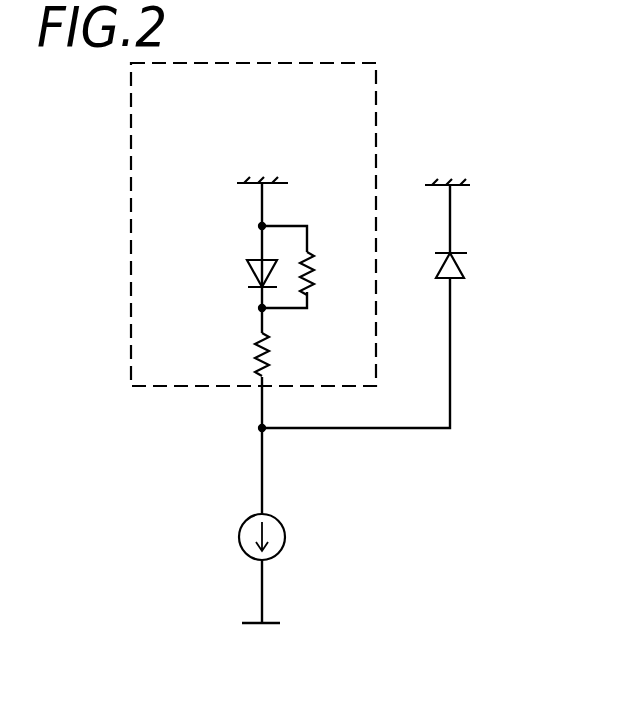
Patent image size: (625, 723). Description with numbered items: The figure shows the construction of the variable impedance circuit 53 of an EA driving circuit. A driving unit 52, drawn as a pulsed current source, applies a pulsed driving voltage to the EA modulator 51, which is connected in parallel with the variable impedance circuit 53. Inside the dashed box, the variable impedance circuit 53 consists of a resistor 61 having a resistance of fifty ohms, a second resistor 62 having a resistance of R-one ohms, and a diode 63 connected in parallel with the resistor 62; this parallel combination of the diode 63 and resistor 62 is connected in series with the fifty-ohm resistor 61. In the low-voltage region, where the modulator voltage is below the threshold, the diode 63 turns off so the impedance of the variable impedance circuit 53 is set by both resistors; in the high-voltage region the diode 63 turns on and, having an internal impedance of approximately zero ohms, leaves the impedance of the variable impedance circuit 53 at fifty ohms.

The EA modulator 51 is at (465, 268).
The driving unit 52 is at (239, 534).
The variable impedance circuit 53 is at (161, 388).
The resistor 61 is at (248, 355).
The resistor 62 is at (313, 260).
The diode 63 is at (248, 267).